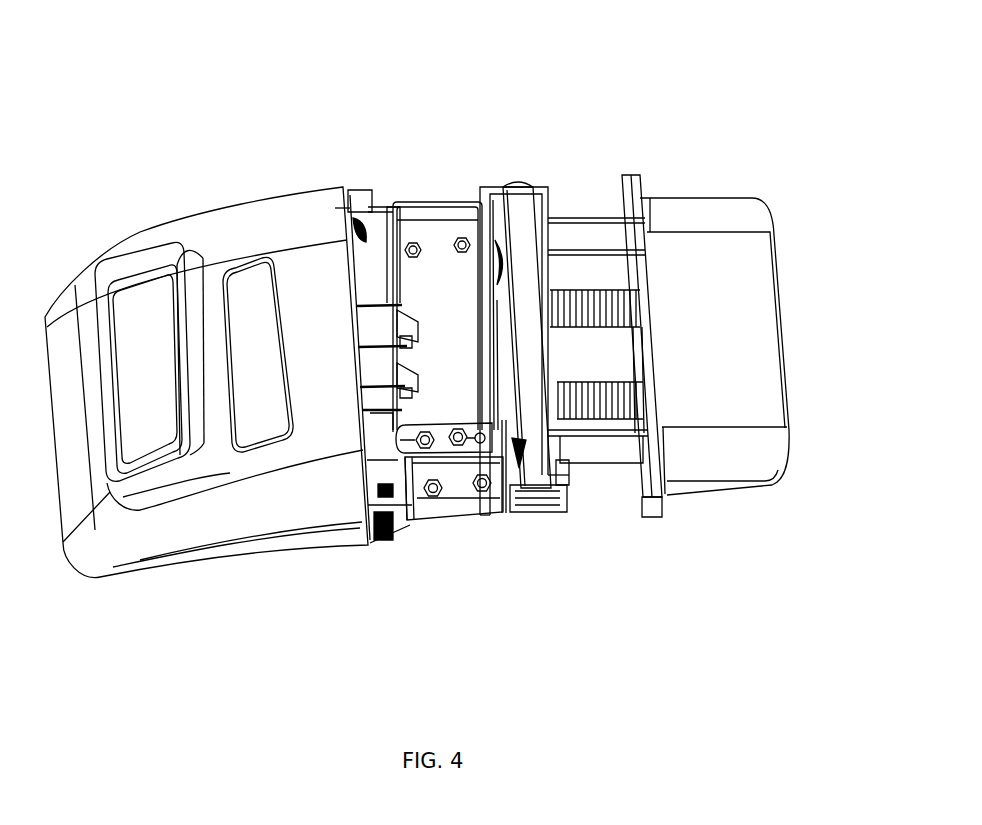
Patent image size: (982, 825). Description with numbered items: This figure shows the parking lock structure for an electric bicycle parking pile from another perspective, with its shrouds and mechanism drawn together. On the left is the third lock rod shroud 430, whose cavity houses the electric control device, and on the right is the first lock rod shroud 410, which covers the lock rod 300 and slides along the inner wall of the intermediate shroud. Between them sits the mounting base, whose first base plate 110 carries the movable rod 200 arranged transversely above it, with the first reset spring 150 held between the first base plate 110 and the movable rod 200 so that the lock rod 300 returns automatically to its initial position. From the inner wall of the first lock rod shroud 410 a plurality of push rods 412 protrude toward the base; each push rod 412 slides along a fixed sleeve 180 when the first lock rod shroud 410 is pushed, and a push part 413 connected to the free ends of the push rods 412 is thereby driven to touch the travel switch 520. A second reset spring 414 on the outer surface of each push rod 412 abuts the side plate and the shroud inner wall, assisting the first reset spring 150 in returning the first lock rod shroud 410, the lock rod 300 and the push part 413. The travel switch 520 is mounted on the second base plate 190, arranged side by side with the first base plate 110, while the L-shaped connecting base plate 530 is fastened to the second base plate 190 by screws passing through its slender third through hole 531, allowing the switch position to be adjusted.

The first base plate 110 is at (515, 445).
The first reset spring 150 is at (487, 202).
The fixed sleeve 180 is at (520, 448).
The second base plate 190 is at (435, 273).
The movable rod 200 is at (521, 210).
The lock rod 300 is at (605, 448).
The first lock rod shroud 410 is at (723, 447).
The push rod 412 is at (570, 283).
The push part 413 is at (478, 515).
The second reset spring 414 is at (597, 280).
The third lock rod shroud 430 is at (250, 227).
The travel switch 520 is at (392, 300).
The connecting base plate 530 is at (388, 448).
The third through hole 531 is at (440, 457).